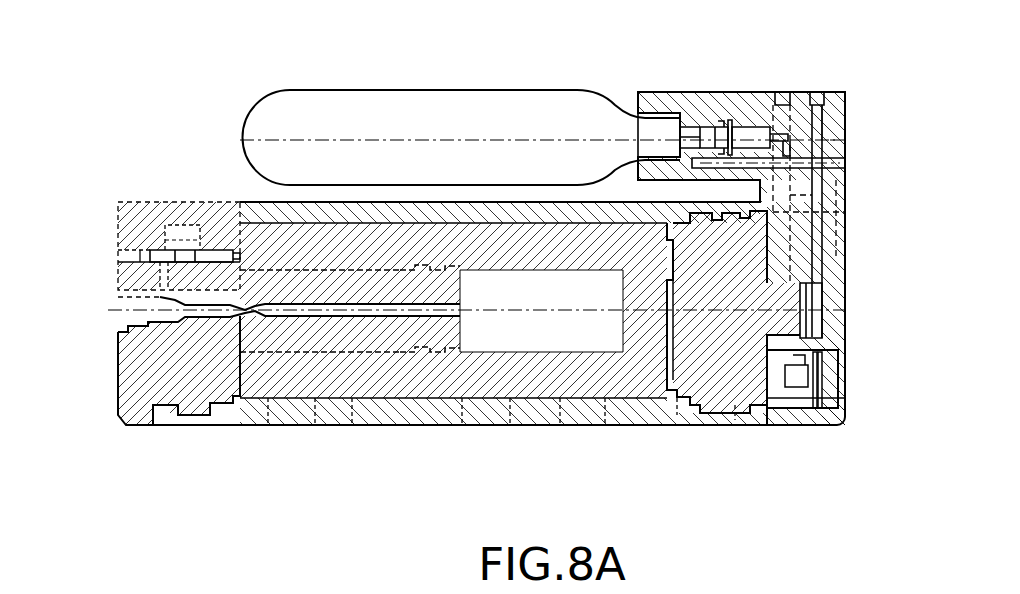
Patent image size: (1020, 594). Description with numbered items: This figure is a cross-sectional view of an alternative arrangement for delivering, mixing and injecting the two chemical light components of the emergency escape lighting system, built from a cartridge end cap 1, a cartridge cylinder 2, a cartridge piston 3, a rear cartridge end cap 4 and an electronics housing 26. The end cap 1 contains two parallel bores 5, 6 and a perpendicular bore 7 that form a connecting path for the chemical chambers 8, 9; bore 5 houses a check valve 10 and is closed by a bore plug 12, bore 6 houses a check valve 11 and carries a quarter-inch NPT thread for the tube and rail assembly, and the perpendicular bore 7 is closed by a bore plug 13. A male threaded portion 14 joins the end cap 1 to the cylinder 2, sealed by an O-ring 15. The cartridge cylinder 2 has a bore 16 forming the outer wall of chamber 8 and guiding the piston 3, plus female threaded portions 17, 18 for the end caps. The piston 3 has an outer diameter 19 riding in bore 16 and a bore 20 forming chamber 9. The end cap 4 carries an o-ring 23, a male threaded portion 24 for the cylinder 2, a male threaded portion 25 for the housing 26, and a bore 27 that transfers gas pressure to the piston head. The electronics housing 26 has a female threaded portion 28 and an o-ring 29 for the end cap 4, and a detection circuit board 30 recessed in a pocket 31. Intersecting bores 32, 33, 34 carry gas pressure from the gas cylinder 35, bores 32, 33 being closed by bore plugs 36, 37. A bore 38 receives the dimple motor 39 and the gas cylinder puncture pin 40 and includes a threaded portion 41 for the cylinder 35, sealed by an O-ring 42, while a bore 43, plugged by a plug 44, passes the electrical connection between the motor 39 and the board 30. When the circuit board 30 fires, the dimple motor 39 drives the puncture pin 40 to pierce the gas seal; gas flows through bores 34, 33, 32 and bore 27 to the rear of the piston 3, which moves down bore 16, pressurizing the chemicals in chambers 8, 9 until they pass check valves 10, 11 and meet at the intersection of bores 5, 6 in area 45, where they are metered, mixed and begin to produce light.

The cartridge end cap 1 is at (120, 417).
The cartridge cylinder 2 is at (399, 420).
The cartridge piston 3 is at (561, 421).
The cartridge end cap 4 is at (748, 416).
The bore 5 is at (150, 260).
The bore 6 is at (268, 421).
The perpendicular bore 7 is at (166, 242).
The chemical chamber 8 is at (315, 421).
The chemical chamber 9 is at (462, 421).
The check valve 10 is at (210, 252).
The check valve 11 is at (118, 380).
The bore plug 12 is at (130, 260).
The bore plug 13 is at (160, 236).
The male threaded portion 14 is at (156, 421).
The O-ring 15 is at (221, 420).
The bore 16 is at (352, 421).
The female threaded portion 17 is at (175, 236).
The female threaded portion 18 is at (716, 418).
The outer diameter 19 is at (605, 413).
The bore 20 is at (511, 421).
The o-ring 23 is at (678, 416).
The male threaded portion 24 is at (736, 421).
The male threaded portion 25 is at (835, 322).
The electronics housing 26 is at (830, 185).
The bore 27 is at (663, 413).
The female threaded portion 28 is at (860, 287).
The o-ring 29 is at (788, 409).
The detection circuit board 30 is at (830, 406).
The pocket 31 is at (836, 372).
The bore 32 is at (843, 115).
The bore 33 is at (845, 140).
The bore 34 is at (702, 140).
The gas cylinder 35 is at (438, 113).
The bore plug 36 is at (840, 168).
The bore plug 37 is at (820, 110).
The bore 38 is at (690, 140).
The dimple motor 39 is at (750, 140).
The gas cylinder puncture pin 40 is at (723, 140).
The threaded portion 41 is at (658, 112).
The O-ring 42 is at (665, 128).
The bore 43 is at (832, 211).
The plug 44 is at (790, 104).
The area 45 is at (140, 300).